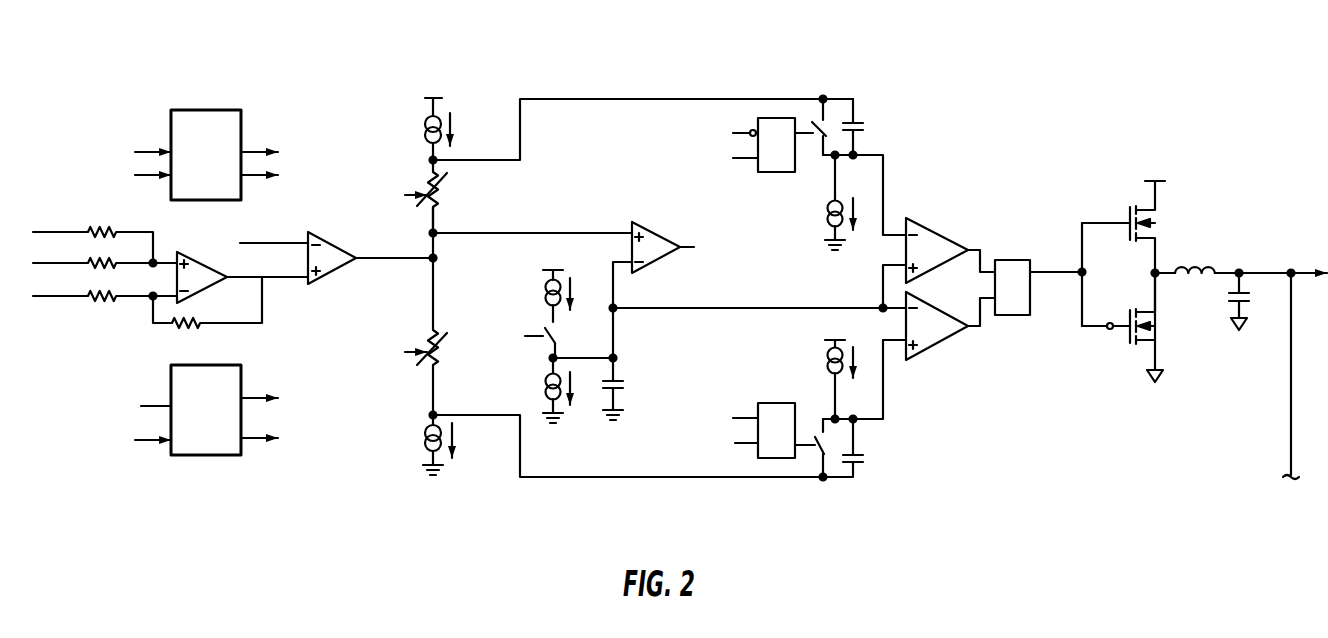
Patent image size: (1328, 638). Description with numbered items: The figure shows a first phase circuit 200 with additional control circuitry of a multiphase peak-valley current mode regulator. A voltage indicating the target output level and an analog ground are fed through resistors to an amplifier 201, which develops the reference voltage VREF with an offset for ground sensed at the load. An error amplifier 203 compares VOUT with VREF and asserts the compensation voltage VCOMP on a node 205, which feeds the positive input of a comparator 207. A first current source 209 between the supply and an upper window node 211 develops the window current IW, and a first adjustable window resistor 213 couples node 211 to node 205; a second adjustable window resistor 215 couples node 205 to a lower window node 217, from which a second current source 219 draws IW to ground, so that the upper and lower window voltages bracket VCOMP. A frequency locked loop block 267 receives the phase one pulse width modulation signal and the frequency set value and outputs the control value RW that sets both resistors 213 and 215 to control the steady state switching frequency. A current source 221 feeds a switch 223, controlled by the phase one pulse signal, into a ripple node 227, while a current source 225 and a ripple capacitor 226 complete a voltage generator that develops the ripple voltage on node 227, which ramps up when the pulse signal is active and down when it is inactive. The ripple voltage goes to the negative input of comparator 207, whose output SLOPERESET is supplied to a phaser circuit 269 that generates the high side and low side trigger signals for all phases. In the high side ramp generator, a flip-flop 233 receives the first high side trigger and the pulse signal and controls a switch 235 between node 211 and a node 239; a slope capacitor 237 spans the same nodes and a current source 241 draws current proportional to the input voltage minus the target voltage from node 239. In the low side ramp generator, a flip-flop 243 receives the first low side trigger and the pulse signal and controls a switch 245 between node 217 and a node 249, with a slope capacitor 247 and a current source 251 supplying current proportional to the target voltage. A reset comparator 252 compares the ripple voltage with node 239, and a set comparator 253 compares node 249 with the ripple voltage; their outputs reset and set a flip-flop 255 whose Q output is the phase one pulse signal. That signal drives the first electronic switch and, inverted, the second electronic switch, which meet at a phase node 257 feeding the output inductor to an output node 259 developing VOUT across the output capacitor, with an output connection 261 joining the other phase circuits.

The first phase circuit 200 is at (320, 44).
The amplifier 201 is at (205, 264).
The error amplifier 203 is at (342, 250).
The node 205 is at (437, 231).
The comparator 207 is at (664, 238).
The first current source 209 is at (432, 118).
The upper window node 211 is at (437, 164).
The first adjustable window resistor 213 is at (433, 183).
The second adjustable window resistor 215 is at (433, 333).
The lower window node 217 is at (433, 413).
The second current source 219 is at (428, 428).
The current source 221 is at (547, 283).
The switch 223 is at (558, 337).
The current source 225 is at (547, 378).
The ripple capacitor 226 is at (626, 396).
The ripple node 227 is at (617, 311).
The set-reset flip-flop 233 is at (743, 153).
The switch 235 is at (826, 128).
The slope capacitor 237 is at (866, 131).
The node 239 is at (884, 197).
The current source 241 is at (840, 201).
The set-reset flip-flop 243 is at (744, 421).
The switch 245 is at (820, 449).
The slope capacitor 247 is at (862, 466).
The node 249 is at (884, 375).
The current source 251 is at (830, 350).
The reset comparator 252 is at (942, 262).
The set comparator 253 is at (942, 337).
The set-reset flip-flop 255 is at (997, 315).
The phase node 257 is at (1152, 273).
The output node 259 is at (1239, 268).
The output connection 261 is at (1291, 404).
The frequency locked loop block 267 is at (220, 184).
The phaser circuit 269 is at (220, 439).